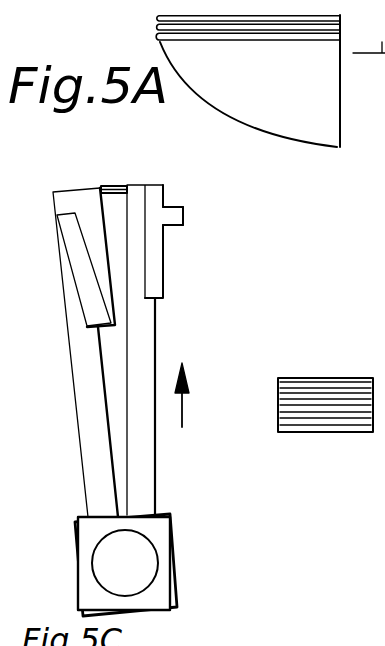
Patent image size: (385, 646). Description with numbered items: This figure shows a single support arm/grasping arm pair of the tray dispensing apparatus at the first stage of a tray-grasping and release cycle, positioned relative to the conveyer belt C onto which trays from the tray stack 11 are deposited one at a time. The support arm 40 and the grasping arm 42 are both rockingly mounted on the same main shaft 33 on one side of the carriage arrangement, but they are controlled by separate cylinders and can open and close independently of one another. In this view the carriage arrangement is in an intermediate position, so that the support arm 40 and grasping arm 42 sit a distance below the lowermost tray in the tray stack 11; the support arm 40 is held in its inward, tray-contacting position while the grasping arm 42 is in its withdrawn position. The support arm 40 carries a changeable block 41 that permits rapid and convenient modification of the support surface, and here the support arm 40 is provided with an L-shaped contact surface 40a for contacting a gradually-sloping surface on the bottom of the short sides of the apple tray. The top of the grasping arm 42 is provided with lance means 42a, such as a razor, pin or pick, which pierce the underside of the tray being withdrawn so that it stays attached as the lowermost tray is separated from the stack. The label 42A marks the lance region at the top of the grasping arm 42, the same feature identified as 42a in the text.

The tray stack 11 is at (320, 105).
The main shaft 33 is at (125, 562).
The support arm 40 is at (150, 330).
The L-shaped contact surface 40a is at (182, 207).
The block 41 is at (157, 252).
The grasping arm 42 is at (82, 267).
The engaging pin 42A is at (113, 186).
The lance means 42a is at (146, 580).
The conveyer belt C is at (337, 378).